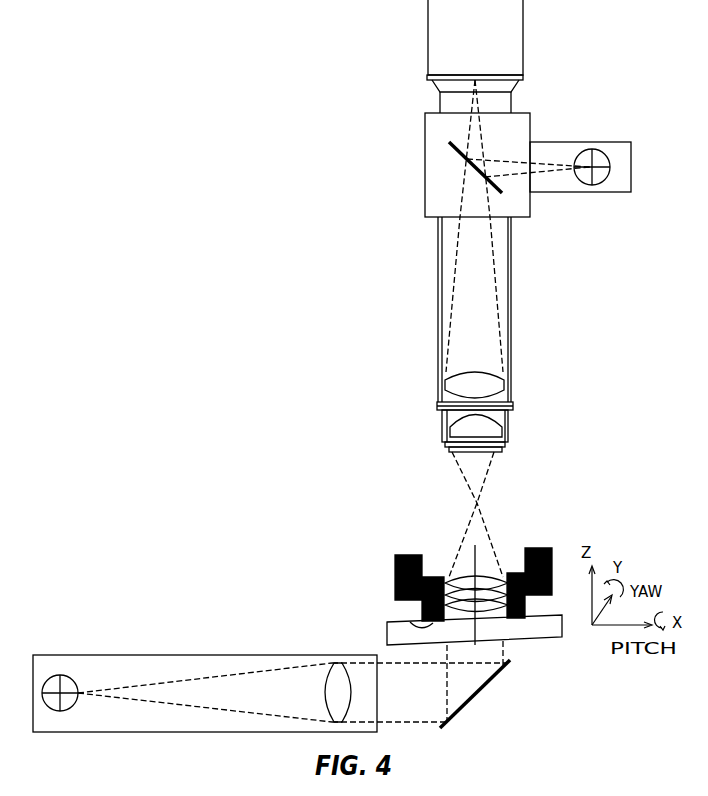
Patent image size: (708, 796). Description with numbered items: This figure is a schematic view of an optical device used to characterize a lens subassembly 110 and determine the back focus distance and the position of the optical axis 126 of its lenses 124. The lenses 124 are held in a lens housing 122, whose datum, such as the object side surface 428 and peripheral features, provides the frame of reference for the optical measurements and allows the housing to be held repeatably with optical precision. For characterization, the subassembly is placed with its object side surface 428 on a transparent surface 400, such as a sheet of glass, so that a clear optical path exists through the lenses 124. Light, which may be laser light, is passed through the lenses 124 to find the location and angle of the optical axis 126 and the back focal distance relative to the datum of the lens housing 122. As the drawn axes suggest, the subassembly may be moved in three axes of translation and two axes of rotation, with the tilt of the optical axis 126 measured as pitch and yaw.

The lens subassembly 110 is at (367, 562).
The lens housing 122 is at (550, 553).
The lenses 124 is at (460, 575).
The optical axis 126 is at (479, 549).
The transparent surface 400 is at (387, 637).
The object side surface 428 is at (410, 622).